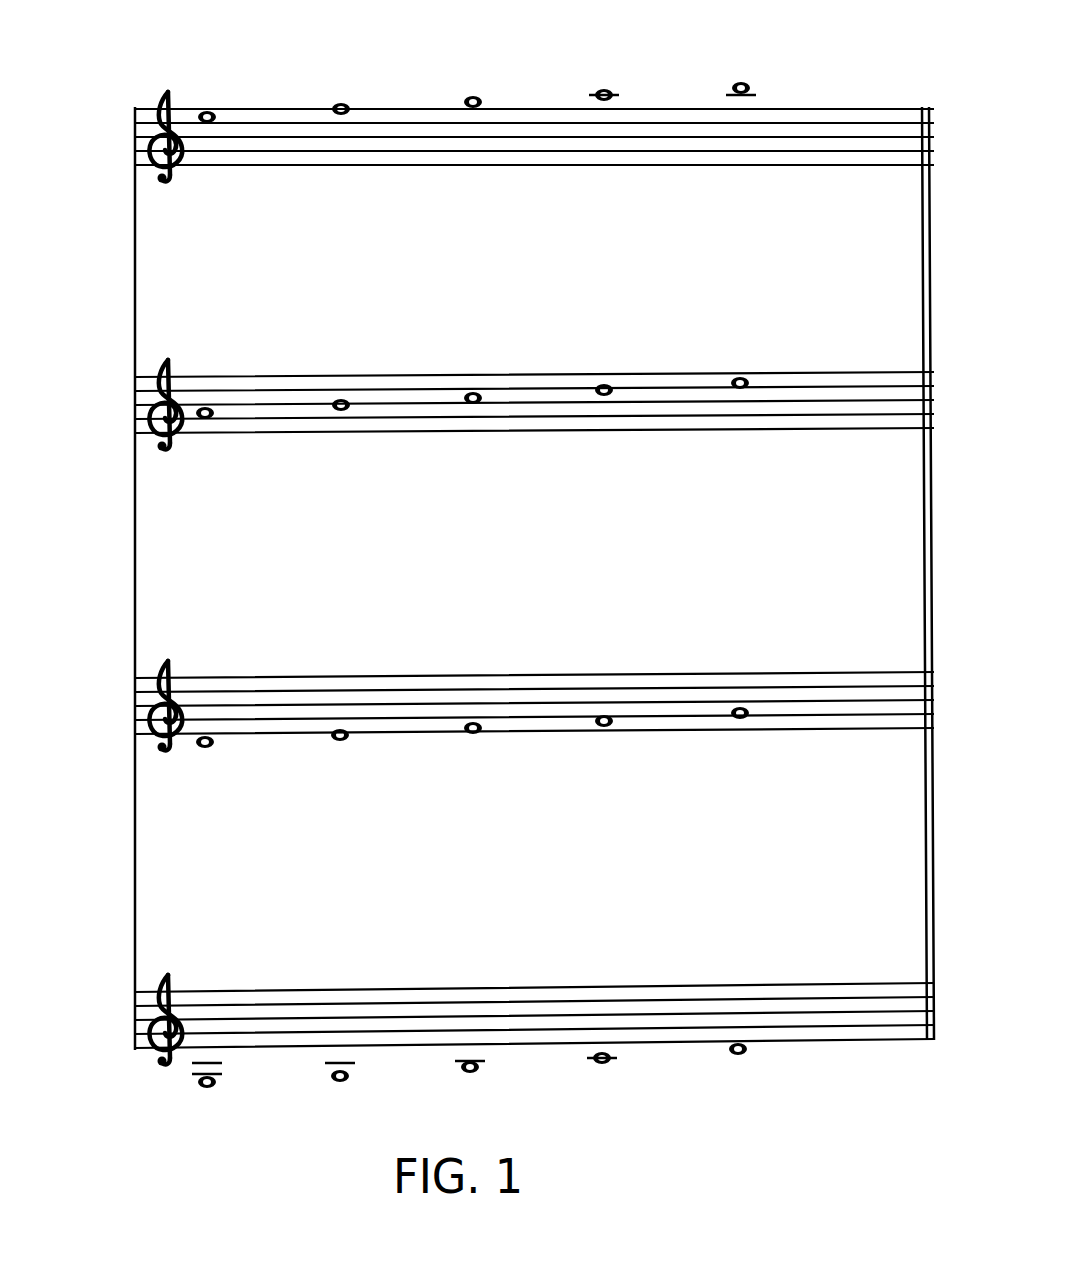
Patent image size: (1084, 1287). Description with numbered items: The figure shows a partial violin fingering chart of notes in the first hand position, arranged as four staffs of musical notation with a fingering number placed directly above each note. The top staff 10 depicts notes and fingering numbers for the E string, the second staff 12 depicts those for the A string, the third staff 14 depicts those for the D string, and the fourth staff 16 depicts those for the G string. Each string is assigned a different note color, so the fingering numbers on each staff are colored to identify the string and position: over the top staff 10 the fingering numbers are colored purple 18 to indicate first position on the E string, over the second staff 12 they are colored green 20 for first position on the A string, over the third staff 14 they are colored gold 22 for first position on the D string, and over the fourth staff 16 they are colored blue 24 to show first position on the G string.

The top staff 10 is at (135, 136).
The second staff 12 is at (135, 404).
The third staff 14 is at (135, 695).
The fourth staff 16 is at (135, 1006).
The purple colored fingering numbers 18 is at (206, 78).
The green colored fingering numbers 20 is at (200, 348).
The gold colored fingering numbers 22 is at (203, 646).
The blue colored fingering numbers 24 is at (201, 955).